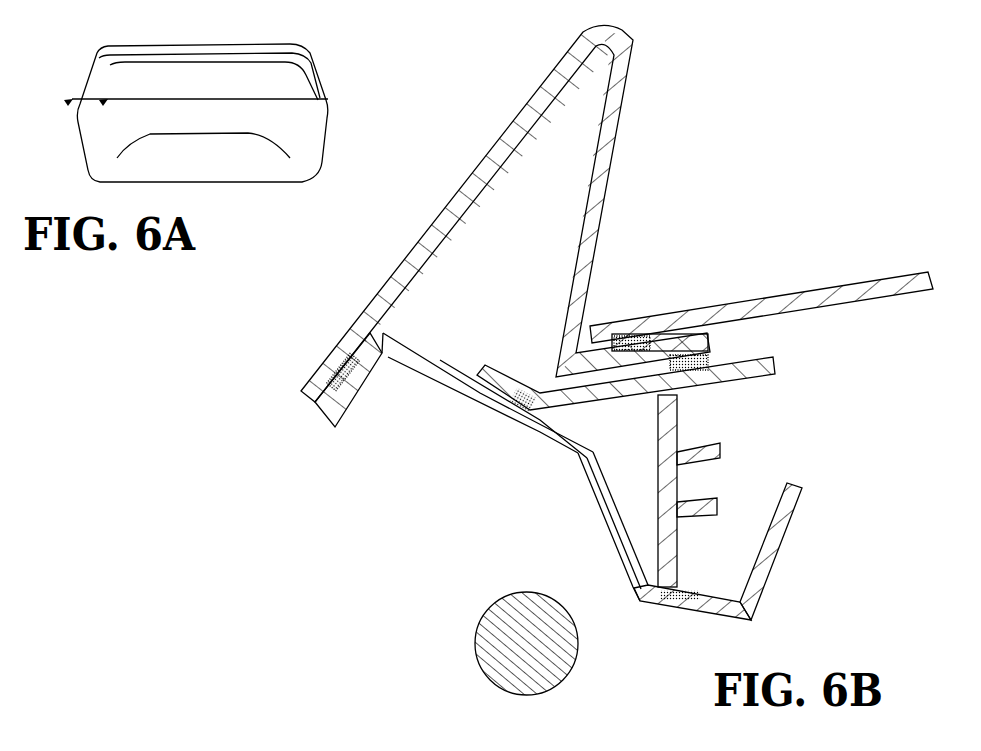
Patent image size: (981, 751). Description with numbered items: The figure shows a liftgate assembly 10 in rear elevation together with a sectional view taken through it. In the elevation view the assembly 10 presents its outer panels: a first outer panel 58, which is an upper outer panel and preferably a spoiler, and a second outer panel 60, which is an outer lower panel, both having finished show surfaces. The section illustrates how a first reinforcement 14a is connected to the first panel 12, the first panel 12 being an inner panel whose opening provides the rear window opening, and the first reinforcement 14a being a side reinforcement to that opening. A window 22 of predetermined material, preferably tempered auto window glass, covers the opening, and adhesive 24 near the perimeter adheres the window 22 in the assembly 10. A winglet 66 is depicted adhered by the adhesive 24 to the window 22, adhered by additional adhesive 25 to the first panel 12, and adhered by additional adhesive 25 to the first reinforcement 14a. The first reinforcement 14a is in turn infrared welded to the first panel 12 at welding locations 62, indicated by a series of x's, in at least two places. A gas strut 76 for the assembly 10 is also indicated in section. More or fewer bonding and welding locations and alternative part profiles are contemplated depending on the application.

In FIG. 6A, the liftgate assembly 10 is at (348, 54).
In FIG. 6A, the first outer panel 58 is at (113, 50).
In FIG. 6A, the second outer panel 60 is at (297, 167).
In FIG. 6B, the winglet 66 is at (617, 127).
In FIG. 6B, the window 22 is at (833, 290).
In FIG. 6B, the adhesive 24 is at (627, 330).
In FIG. 6B, the additional adhesive 25 is at (362, 385).
In FIG. 6B, the first reinforcement 14a is at (637, 398).
In FIG. 6B, the welding location 62 is at (500, 413).
In FIG. 6B, the first panel 12 is at (600, 503).
In FIG. 6B, the gas strut 76 is at (477, 640).